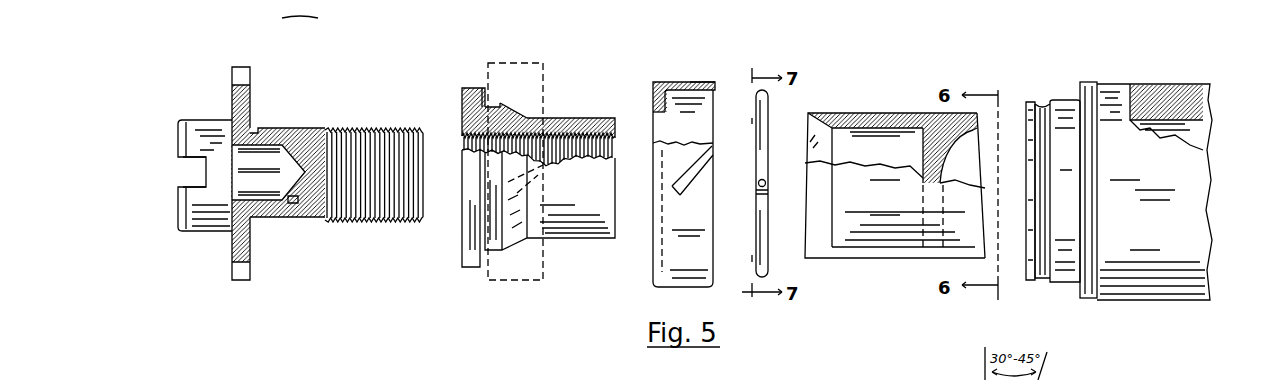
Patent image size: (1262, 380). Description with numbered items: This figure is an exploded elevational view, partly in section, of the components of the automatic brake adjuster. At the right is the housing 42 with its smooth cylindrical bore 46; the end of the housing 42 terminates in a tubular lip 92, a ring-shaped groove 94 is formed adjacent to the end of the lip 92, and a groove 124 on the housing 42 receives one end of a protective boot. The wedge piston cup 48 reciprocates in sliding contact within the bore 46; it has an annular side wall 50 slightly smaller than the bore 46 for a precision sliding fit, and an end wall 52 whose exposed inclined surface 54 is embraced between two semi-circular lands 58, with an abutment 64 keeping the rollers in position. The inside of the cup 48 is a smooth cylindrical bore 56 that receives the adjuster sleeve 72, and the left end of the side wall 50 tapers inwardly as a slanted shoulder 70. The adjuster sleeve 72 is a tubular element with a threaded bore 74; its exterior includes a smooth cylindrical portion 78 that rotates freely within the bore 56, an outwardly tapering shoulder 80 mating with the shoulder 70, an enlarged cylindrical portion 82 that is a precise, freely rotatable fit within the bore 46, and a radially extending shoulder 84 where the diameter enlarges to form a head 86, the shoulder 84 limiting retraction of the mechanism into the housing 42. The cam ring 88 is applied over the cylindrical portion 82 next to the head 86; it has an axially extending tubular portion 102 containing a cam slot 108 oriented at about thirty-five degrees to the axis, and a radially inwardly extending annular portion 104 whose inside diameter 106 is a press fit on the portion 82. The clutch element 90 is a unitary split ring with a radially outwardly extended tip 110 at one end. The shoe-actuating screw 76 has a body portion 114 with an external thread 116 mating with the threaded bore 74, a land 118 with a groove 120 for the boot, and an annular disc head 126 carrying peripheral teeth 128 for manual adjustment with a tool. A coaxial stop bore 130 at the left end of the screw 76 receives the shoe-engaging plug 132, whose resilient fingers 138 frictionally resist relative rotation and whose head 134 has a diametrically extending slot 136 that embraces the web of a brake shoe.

The housing 42 is at (1112, 302).
The cylindrical bore 46 is at (1200, 132).
The wedge piston cup 48 is at (880, 260).
The annular side wall 50 is at (873, 114).
The end wall 52 is at (925, 160).
The inclined surface 54 is at (945, 178).
The cylindrical bore 56 is at (850, 130).
The semi-circular lands 58 is at (983, 202).
The abutment 64 is at (975, 130).
The slanted shoulder 70 is at (820, 122).
The adjuster sleeve 72 is at (556, 242).
The threaded bore 74 is at (468, 138).
The shoe-actuating screw 76 is at (203, 108).
The cylindrical portion 78 is at (606, 120).
The tapering shoulder 80 is at (522, 116).
The enlarged cylindrical portion 82 is at (502, 102).
The radially extending shoulder 84 is at (488, 92).
The head 86 is at (472, 90).
The cam ring 88 is at (648, 285).
The clutch element 90 is at (766, 254).
The tubular lip 92 is at (1057, 286).
The ring-shaped groove 94 is at (1043, 106).
The tubular portion 102 is at (550, 66).
The annular portion 104 is at (683, 82).
The inside diameter 106 is at (658, 112).
The cam slot 108 is at (690, 186).
The radially outwardly extended tip 110 is at (758, 183).
The body portion 114 is at (395, 145).
The external thread 116 is at (370, 128).
The land 118 is at (255, 185).
The groove 120 is at (255, 128).
The groove 124 is at (1090, 85).
The annular disc head 126 is at (235, 92).
The teeth 128 is at (240, 70).
The stop bore 130 is at (292, 200).
The shoe-engaging plug 132 is at (183, 229).
The head 134 is at (180, 198).
The slot 136 is at (195, 184).
The resilient fingers 138 is at (268, 150).